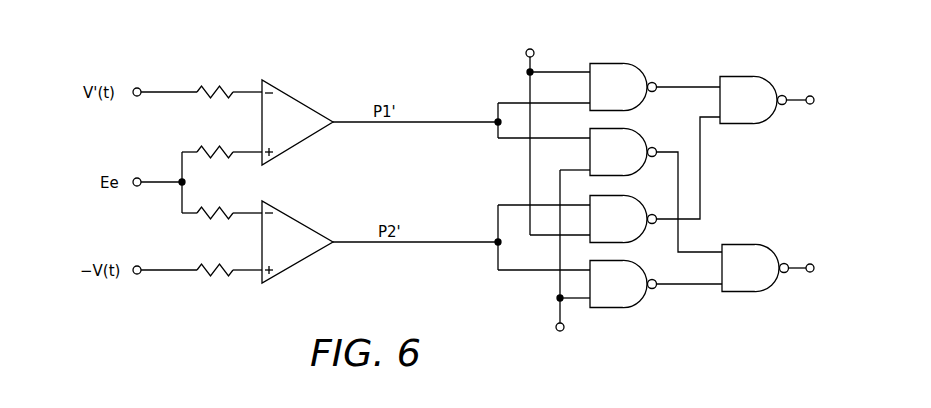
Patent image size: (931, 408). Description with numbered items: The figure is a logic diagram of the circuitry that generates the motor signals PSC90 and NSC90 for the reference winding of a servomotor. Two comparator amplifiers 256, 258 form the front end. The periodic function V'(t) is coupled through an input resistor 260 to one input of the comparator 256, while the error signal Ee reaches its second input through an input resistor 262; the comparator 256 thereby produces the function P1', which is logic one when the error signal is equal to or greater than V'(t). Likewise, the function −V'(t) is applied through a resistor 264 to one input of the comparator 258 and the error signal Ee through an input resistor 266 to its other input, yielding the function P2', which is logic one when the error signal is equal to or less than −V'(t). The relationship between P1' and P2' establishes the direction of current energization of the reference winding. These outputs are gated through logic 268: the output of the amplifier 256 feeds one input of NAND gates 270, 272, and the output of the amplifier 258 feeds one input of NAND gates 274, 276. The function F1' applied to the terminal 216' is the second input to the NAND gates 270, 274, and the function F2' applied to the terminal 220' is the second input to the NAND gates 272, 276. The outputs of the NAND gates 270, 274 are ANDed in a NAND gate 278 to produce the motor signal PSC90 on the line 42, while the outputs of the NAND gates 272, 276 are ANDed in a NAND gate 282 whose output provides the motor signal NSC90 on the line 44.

The input resistor 260 is at (206, 84).
The input resistor 262 is at (206, 148).
The resistor 264 is at (220, 264).
The input resistor 266 is at (229, 209).
The comparator amplifier 256 is at (298, 115).
The comparator amplifier 258 is at (303, 235).
The terminal 216' is at (540, 128).
The terminal 220' is at (584, 265).
The logic 268 is at (779, 189).
The NAND gate 270 is at (620, 83).
The NAND gate 272 is at (633, 150).
The NAND gate 274 is at (625, 222).
The NAND gate 276 is at (638, 295).
The NAND gate 278 is at (747, 90).
The NAND gate 282 is at (755, 253).
The line 42 is at (811, 95).
The line 44 is at (811, 263).